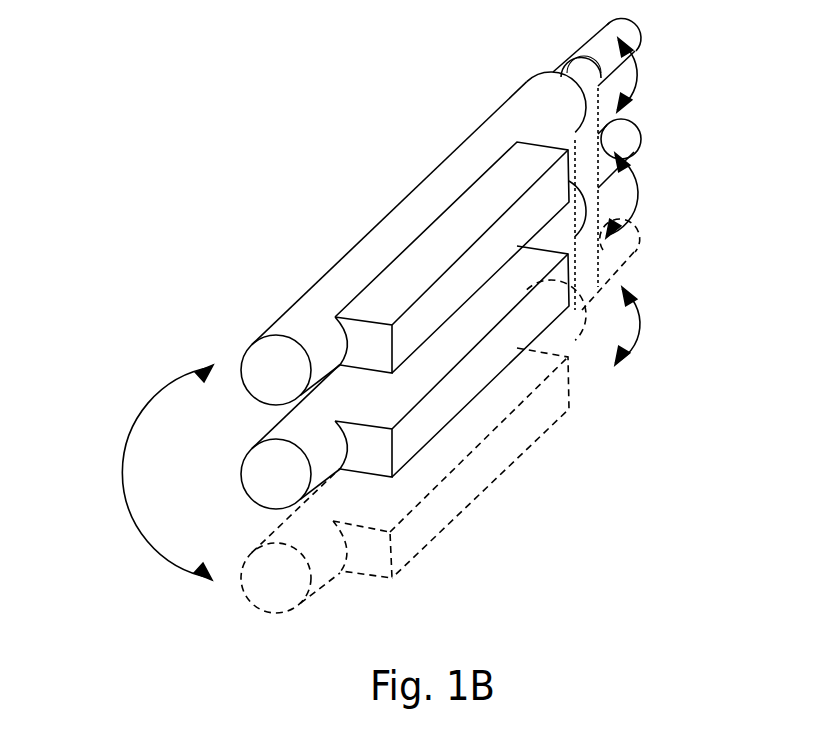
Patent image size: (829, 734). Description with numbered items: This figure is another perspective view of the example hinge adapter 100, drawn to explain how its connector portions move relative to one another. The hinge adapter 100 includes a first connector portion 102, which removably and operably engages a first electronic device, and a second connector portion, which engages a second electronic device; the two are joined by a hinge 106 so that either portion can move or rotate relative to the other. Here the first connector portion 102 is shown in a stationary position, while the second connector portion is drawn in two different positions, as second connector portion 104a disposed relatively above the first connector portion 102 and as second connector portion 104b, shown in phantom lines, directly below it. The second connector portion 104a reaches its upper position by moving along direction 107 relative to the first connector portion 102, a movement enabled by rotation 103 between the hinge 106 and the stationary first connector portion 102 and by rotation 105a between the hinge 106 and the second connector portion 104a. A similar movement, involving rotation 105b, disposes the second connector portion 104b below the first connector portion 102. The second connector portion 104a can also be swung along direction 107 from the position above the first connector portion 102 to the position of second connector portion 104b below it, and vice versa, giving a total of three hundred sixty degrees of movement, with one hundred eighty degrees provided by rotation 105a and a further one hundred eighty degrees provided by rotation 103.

The hinge adapter 100 is at (281, 133).
The first connector portion 102 is at (507, 338).
The rotation 103 is at (642, 185).
The second connector portion 104a is at (395, 287).
The second connector portion 104b is at (443, 502).
The rotation 105a is at (635, 71).
The rotation 105b is at (641, 325).
The hinge 106 is at (588, 138).
The direction 107 is at (123, 468).